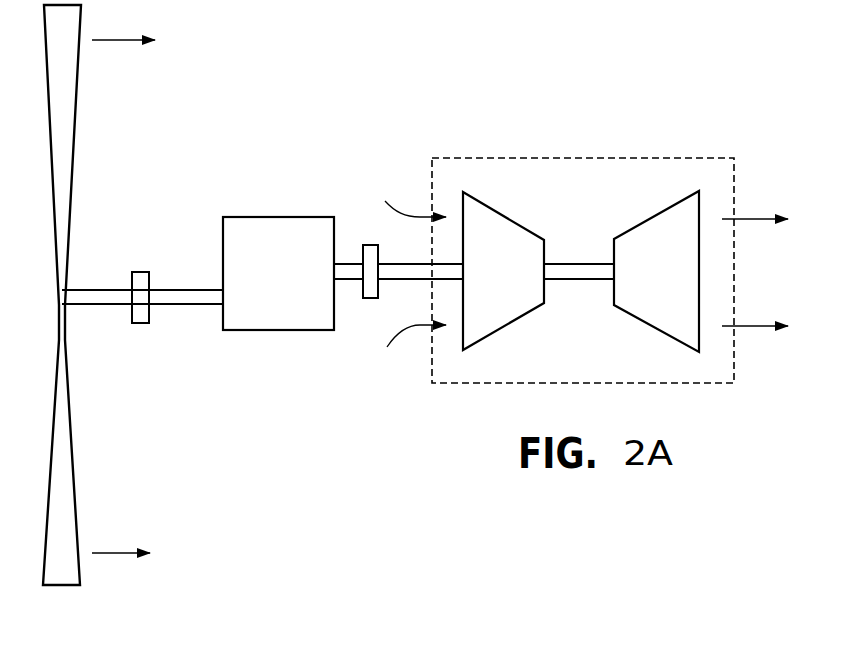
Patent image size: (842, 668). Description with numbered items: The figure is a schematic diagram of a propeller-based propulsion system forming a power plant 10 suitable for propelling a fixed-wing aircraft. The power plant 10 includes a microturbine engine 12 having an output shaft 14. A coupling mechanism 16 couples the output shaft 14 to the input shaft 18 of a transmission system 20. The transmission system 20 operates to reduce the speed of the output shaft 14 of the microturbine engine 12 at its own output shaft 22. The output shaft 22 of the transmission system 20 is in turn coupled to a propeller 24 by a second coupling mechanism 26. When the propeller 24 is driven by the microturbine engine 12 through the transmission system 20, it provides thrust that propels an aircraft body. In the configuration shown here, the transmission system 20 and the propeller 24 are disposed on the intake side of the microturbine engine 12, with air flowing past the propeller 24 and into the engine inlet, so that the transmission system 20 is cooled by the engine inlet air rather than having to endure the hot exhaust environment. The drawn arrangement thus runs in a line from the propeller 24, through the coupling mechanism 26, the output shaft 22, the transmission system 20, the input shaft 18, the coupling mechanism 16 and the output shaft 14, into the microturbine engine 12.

The power plant 10 is at (273, 184).
The microturbine engine 12 is at (603, 158).
The output shaft 14 is at (423, 281).
The coupling mechanism 16 is at (366, 245).
The input shaft 18 is at (337, 281).
The transmission system 20 is at (261, 331).
The output shaft 22 is at (199, 290).
The propeller 24 is at (75, 97).
The coupling mechanism 26 is at (138, 324).